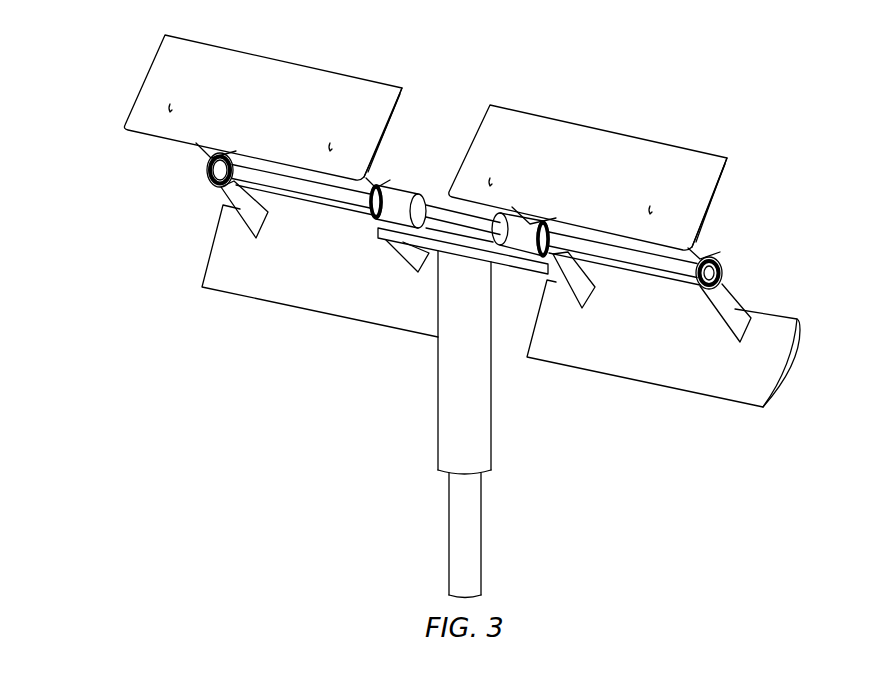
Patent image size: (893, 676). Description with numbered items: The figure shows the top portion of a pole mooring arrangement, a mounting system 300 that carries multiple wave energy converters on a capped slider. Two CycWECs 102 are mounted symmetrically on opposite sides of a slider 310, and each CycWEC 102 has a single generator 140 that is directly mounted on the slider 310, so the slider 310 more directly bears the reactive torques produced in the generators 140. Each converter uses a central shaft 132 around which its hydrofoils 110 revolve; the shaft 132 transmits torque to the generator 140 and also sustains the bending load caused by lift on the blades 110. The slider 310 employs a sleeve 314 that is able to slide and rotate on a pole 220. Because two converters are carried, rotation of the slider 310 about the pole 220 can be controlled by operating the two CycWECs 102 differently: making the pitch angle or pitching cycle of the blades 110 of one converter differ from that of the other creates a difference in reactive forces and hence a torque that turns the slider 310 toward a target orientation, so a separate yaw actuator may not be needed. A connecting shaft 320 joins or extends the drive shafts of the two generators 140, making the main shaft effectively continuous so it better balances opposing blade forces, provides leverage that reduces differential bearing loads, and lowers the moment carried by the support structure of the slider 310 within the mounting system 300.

The CycWEC 102 is at (90, 130).
The hydrofoils 110 is at (342, 313).
The central shaft 132 is at (288, 195).
The generator 140 is at (404, 189).
The pole 220 is at (472, 567).
The mounting system 300 is at (298, 459).
The slider 310 is at (500, 266).
The sleeve 314 is at (445, 385).
The connecting shaft 320 is at (455, 212).